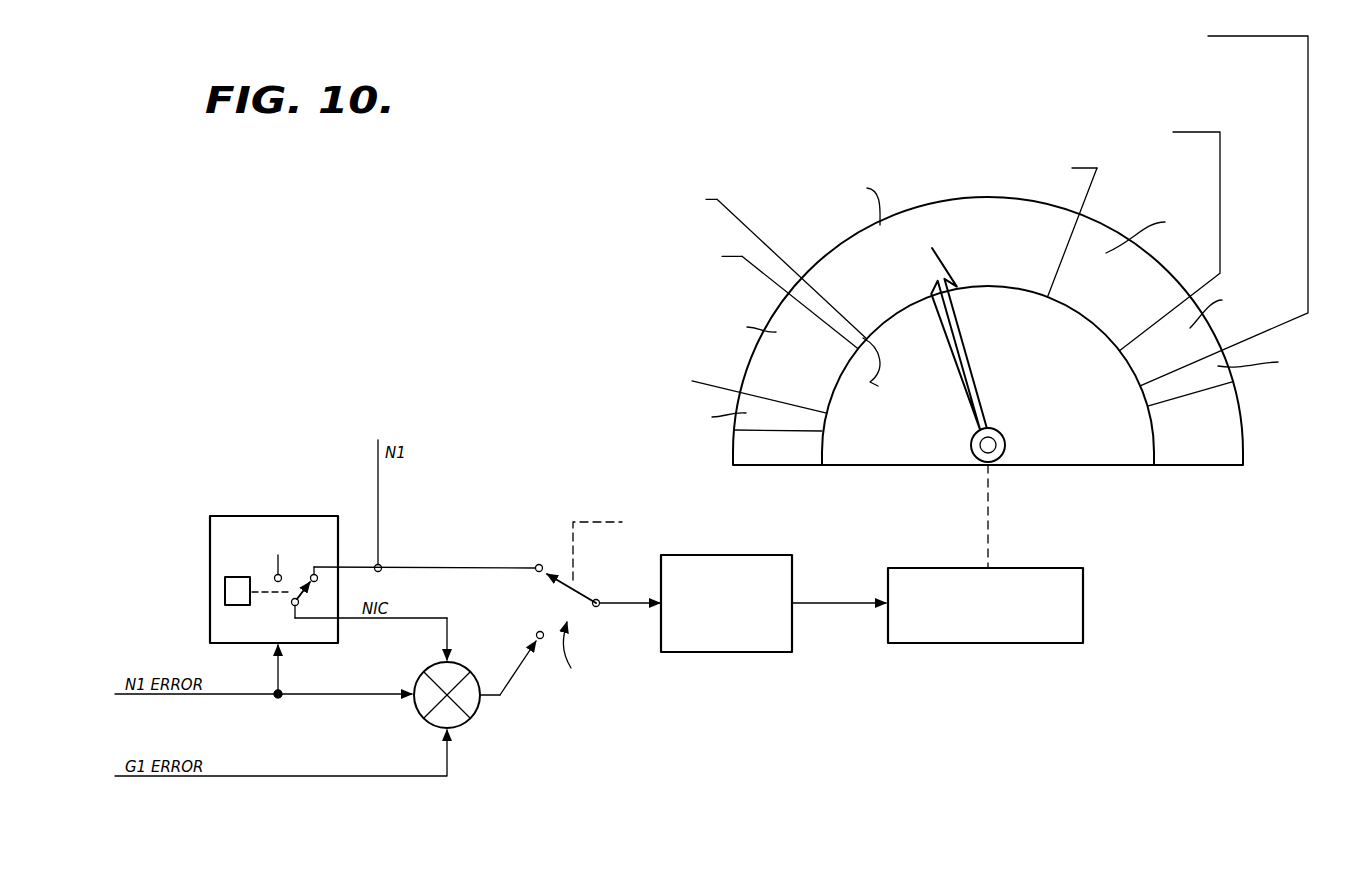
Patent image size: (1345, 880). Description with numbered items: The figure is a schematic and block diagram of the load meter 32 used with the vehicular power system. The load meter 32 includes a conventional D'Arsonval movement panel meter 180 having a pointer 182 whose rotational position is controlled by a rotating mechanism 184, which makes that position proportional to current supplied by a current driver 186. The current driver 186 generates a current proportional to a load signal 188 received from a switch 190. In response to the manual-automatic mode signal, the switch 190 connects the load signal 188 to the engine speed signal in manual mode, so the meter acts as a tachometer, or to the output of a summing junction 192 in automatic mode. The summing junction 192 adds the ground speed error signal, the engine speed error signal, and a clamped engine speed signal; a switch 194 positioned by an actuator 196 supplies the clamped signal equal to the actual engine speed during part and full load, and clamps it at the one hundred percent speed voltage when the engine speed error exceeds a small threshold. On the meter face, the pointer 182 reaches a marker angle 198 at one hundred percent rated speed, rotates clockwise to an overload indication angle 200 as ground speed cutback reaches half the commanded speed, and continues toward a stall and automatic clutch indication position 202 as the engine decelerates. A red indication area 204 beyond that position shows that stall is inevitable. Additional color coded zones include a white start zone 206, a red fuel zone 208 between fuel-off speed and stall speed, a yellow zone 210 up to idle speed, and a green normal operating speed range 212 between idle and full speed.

The load meter 32 is at (1162, 766).
The panel meter 180 is at (918, 206).
The pointer 182 is at (968, 361).
The rotating mechanism 184 is at (1030, 643).
The current driver 186 is at (757, 652).
The load signal 188 is at (612, 605).
The switch 190 is at (584, 652).
The summing junction 192 is at (472, 717).
The switch 194 is at (305, 598).
The actuator 196 is at (225, 592).
The marker angle 198 is at (1076, 232).
The overload indication angle 200 is at (1180, 325).
The stall and automatic clutch indication position 202 is at (1197, 358).
The red indication area 204 is at (1196, 382).
The start zone 206 is at (812, 425).
The fuel zone 208 is at (760, 353).
The yellow zone 210 is at (806, 283).
The speed range 212 is at (976, 222).